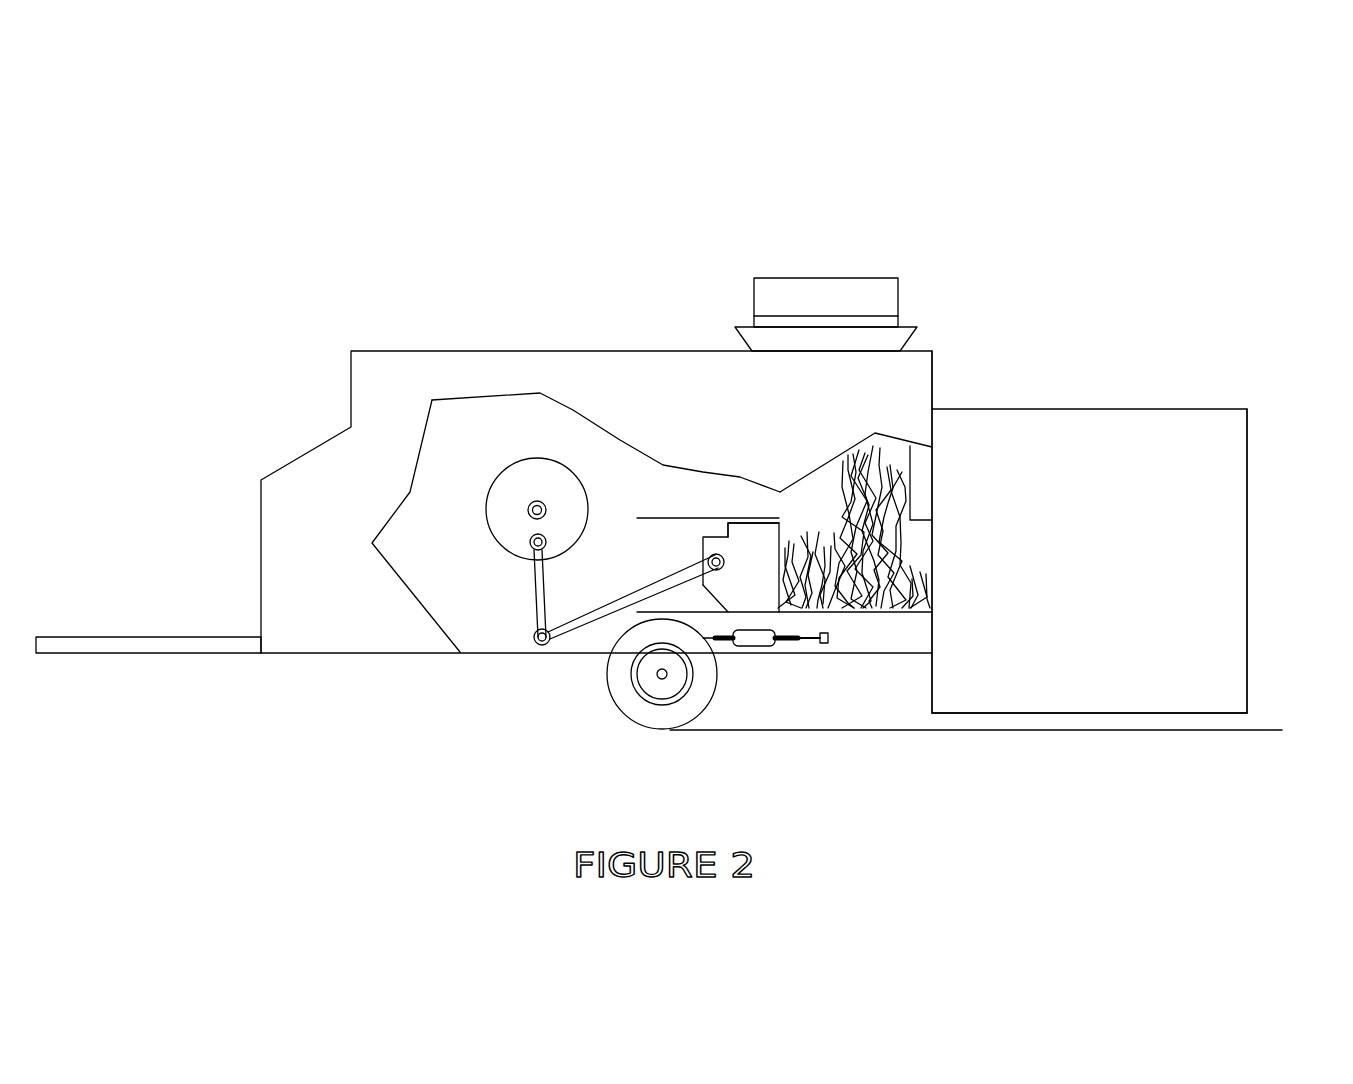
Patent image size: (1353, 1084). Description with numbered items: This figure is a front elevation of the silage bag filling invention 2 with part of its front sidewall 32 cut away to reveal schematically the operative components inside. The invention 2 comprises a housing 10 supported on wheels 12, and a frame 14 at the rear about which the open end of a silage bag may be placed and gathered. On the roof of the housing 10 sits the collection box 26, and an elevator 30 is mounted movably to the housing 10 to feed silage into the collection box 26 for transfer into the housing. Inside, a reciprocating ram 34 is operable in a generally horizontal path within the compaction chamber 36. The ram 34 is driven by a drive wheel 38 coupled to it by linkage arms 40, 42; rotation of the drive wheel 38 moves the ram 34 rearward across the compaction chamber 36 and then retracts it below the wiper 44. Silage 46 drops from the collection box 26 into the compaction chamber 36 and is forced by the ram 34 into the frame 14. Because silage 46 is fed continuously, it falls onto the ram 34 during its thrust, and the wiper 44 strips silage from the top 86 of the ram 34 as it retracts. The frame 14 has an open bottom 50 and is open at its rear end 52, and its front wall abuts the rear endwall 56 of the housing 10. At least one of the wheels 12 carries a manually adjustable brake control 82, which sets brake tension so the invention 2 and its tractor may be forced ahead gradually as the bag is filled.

The silage bag filling invention 2 is at (165, 510).
The housing 10 is at (596, 485).
The wheels 12 is at (687, 707).
The frame 14 is at (1093, 534).
The collection box 26 is at (872, 307).
The elevator 30 is at (868, 270).
The front sidewall 32 is at (321, 605).
The reciprocating ram 34 is at (784, 514).
The compaction chamber 36 is at (919, 527).
The drive wheel 38 is at (559, 428).
The linkage arm 40 is at (586, 585).
The linkage arm 42 is at (629, 664).
The wiper 44 is at (606, 432).
The silage 46 is at (921, 436).
The open bottom 50 is at (976, 751).
The rear end 52 is at (1286, 561).
The rear endwall 56 is at (991, 350).
The brake control 82 is at (777, 678).
The top 86 is at (792, 455).